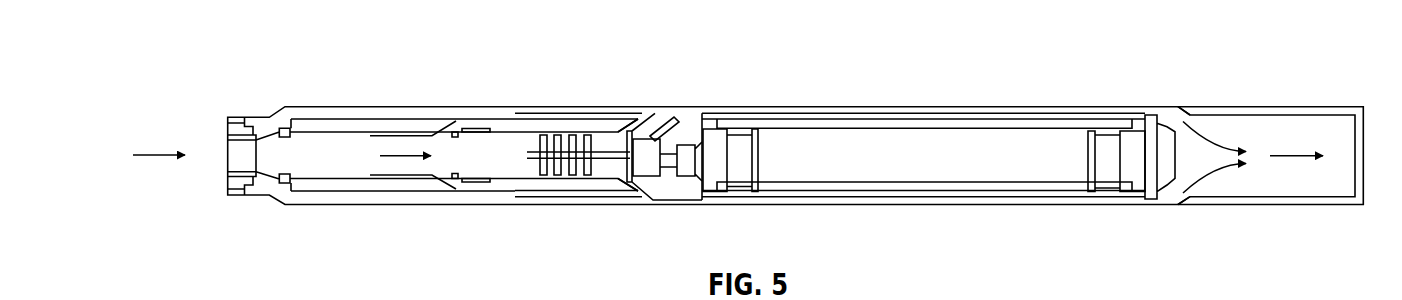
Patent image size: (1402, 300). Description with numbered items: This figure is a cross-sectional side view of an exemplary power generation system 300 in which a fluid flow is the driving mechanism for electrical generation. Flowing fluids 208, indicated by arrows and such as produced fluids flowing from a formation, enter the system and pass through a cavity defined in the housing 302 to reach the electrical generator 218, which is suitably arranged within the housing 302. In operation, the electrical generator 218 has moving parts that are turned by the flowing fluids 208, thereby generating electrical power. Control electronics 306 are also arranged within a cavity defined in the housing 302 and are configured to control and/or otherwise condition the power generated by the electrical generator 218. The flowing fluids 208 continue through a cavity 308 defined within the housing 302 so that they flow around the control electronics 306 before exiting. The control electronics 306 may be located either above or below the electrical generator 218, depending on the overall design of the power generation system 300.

The power generation system 300 is at (185, 68).
The flowing fluids 208 is at (154, 156).
The electrical generator 218 is at (530, 140).
The housing 302 is at (747, 202).
The control electronics 306 is at (901, 168).
The cavity 308 is at (657, 205).